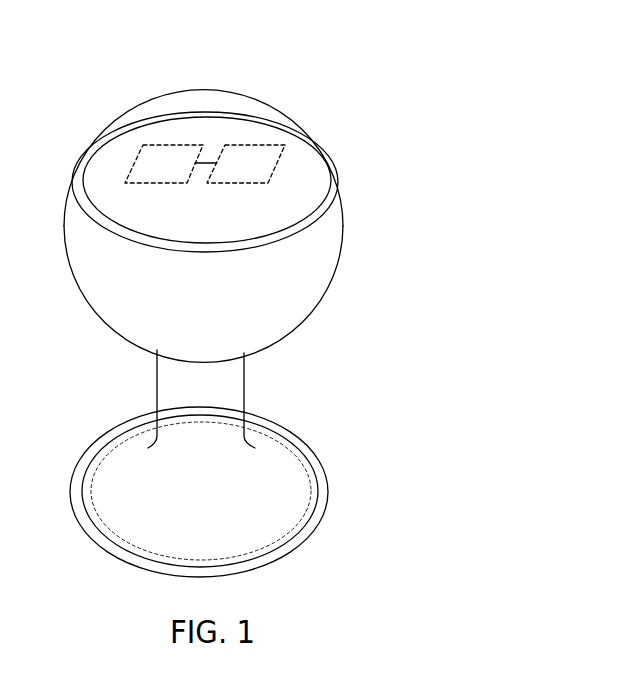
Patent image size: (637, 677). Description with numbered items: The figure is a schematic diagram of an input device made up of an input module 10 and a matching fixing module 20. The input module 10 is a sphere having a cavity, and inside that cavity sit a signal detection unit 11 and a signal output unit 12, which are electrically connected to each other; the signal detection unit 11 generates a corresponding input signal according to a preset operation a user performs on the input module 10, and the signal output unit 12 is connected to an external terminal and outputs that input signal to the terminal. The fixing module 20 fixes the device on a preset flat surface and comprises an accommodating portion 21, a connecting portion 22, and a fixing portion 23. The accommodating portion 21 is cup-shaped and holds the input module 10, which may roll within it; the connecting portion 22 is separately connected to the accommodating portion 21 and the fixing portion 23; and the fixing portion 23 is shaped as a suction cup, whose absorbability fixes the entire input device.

The input module 10 is at (243, 95).
The signal detection unit 11 is at (257, 163).
The signal output unit 12 is at (147, 163).
The fixing module 20 is at (268, 390).
The accommodating portion 21 is at (315, 288).
The connecting portion 22 is at (244, 408).
The fixing portion 23 is at (229, 492).